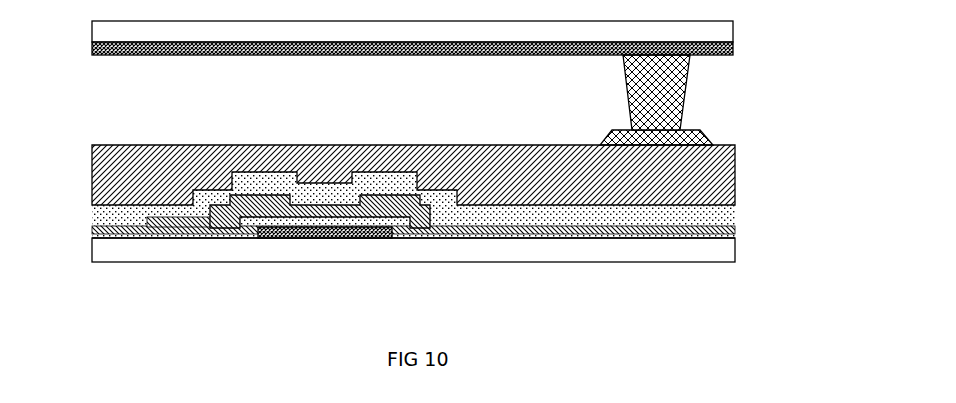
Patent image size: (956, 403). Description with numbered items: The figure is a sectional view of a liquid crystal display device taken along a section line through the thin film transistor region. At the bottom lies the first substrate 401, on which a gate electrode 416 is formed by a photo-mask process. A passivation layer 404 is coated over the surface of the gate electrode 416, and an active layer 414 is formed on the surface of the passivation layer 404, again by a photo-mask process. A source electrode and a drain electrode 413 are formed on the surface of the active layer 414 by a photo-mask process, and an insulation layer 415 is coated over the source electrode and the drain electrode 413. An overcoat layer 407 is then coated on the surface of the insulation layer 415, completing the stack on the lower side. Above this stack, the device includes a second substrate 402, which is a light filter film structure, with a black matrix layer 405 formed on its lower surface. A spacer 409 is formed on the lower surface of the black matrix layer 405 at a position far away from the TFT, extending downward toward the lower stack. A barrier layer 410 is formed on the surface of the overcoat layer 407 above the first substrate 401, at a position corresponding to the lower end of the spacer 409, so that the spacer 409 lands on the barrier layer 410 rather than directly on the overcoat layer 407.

The first substrate 401 is at (727, 250).
The second substrate 402 is at (733, 36).
The passivation layer 404 is at (397, 217).
The black matrix layer 405 is at (733, 56).
The overcoat layer 407 is at (735, 150).
The spacer 409 is at (688, 82).
The barrier layer 410 is at (603, 142).
The source electrode and drain electrode 413 is at (147, 218).
The active layer 414 is at (238, 234).
The insulation layer 415 is at (727, 210).
The gate electrode 416 is at (343, 229).